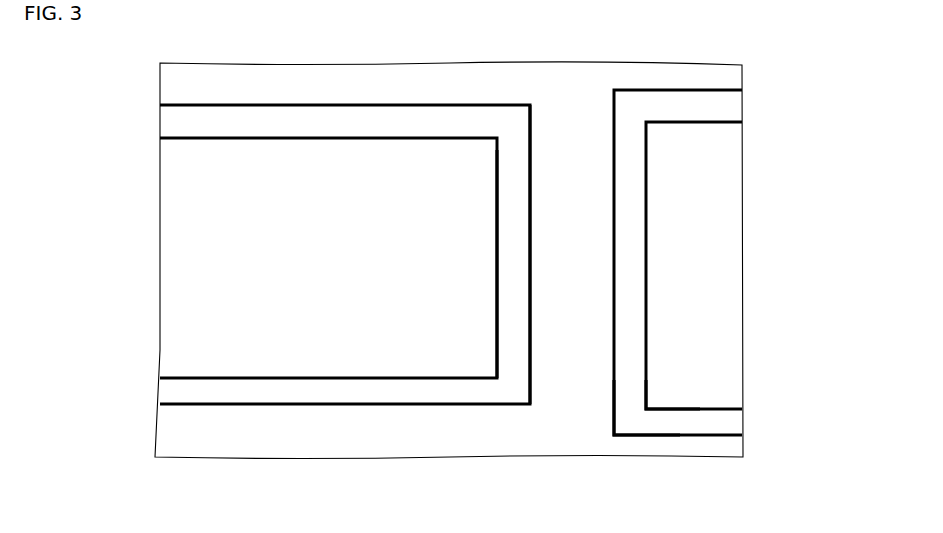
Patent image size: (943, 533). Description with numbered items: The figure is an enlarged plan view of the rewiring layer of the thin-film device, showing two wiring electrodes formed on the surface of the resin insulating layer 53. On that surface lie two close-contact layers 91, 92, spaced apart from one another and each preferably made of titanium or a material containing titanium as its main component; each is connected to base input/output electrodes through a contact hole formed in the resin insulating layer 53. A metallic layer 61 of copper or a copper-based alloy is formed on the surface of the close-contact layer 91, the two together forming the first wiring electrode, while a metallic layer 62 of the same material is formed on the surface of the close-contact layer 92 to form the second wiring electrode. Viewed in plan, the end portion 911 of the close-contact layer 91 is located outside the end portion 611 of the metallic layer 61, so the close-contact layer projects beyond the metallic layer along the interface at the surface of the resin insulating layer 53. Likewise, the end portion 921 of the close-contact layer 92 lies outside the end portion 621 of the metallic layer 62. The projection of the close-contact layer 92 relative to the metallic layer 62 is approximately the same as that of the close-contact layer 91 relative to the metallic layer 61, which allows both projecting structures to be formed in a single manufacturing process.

The resin insulating layer 53 is at (379, 80).
The close-contact layer 91 is at (177, 123).
The metallic layer 61 is at (176, 203).
The end portion of the metallic layer 611 is at (500, 165).
The end portion of the close-contact layer 911 is at (535, 120).
The close-contact layer 92 is at (735, 102).
The metallic layer 62 is at (727, 158).
The end portion of the close-contact layer 921 is at (612, 415).
The end portion of the metallic layer 621 is at (645, 395).